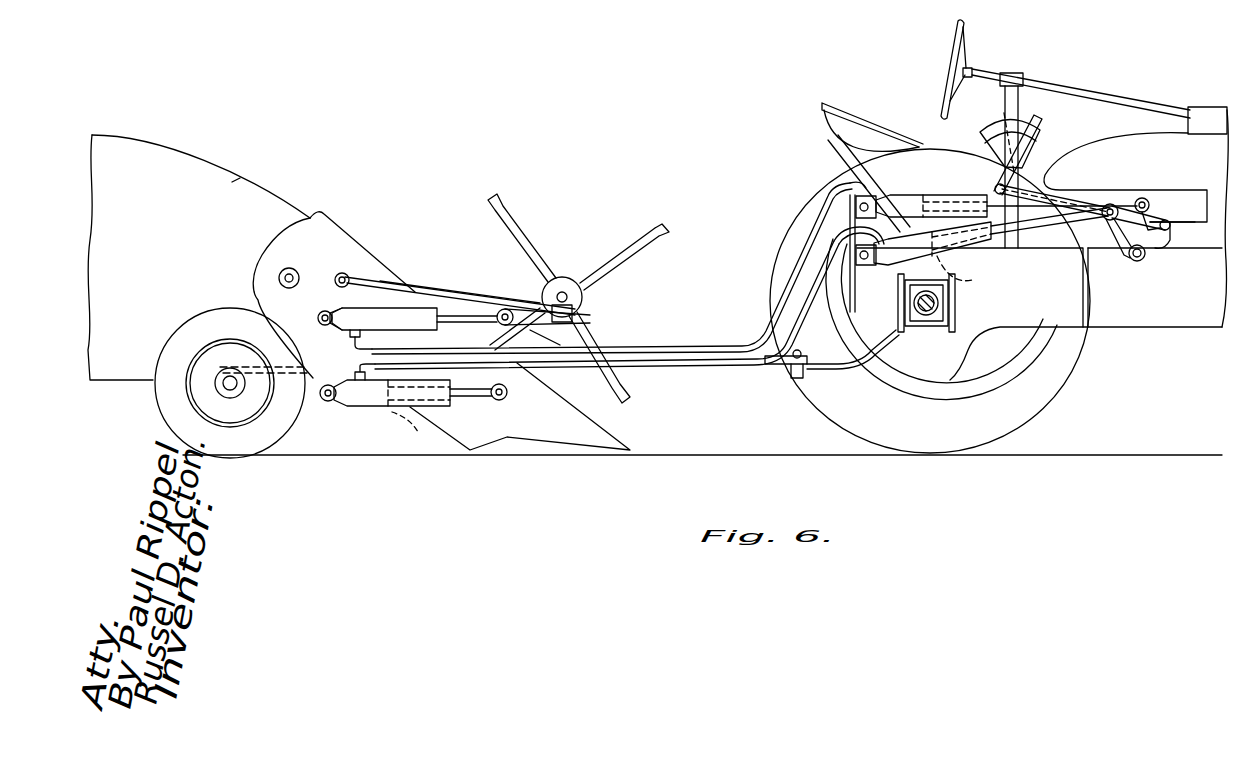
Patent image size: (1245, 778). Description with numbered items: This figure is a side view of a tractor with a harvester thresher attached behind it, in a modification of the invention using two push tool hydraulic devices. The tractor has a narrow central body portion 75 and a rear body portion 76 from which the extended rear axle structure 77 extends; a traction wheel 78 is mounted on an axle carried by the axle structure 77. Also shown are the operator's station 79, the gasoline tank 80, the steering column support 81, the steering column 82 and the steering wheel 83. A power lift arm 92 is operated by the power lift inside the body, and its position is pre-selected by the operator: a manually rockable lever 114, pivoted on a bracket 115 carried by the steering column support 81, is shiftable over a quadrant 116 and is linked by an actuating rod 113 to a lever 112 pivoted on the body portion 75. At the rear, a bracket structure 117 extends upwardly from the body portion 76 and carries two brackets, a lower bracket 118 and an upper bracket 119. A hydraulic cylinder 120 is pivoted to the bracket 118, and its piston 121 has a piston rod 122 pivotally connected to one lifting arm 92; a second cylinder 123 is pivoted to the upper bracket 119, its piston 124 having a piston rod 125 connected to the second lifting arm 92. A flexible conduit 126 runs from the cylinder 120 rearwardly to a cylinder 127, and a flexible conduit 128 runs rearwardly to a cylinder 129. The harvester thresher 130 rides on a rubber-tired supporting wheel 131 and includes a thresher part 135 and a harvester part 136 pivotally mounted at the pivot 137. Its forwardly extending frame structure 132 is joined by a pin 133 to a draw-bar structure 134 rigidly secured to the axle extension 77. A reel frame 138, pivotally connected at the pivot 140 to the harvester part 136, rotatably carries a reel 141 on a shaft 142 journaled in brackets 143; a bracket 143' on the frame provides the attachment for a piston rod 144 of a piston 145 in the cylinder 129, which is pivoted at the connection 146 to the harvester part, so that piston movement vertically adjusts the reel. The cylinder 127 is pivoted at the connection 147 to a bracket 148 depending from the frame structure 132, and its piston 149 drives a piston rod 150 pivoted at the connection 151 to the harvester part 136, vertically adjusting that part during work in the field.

The narrow central body portion 75 is at (1155, 328).
The rear body portion 76 is at (1043, 328).
The rear axle structure 77 is at (940, 322).
The traction wheel 78 is at (1020, 400).
The operator's station 79 is at (847, 124).
The gasoline tank 80 is at (1118, 145).
The steering column support 81 is at (1014, 97).
The steering column 82 is at (1096, 98).
The steering wheel 83 is at (964, 24).
The power lift arm 92 is at (1150, 208).
The lever 112 is at (1167, 240).
The actuating rod 113 is at (1055, 195).
The manually rockable lever 114 is at (1037, 124).
The bracket 115 is at (985, 148).
The quadrant 116 is at (1000, 125).
The bracket structure 117 is at (847, 292).
The bracket 118 is at (856, 256).
The upper bracket 119 is at (856, 206).
The hydraulic cylinder 120 is at (965, 250).
The piston 121 is at (955, 283).
The piston rod 122 is at (1044, 242).
The second cylinder 123 is at (907, 200).
The piston 124 is at (926, 203).
The piston rod 125 is at (996, 204).
The flexible conduit 126 is at (804, 290).
The cylinder 127 is at (366, 406).
The flexible conduit 128 is at (817, 236).
The cylinder 129 is at (362, 310).
The harvester thresher 130 is at (210, 132).
The supporting wheel 131 is at (168, 398).
The frame structure 132 is at (703, 369).
The pin 133 is at (794, 378).
The draw-bar structure 134 is at (842, 370).
The thresher part 135 is at (232, 180).
The harvester part 136 is at (322, 226).
The pivot 137 is at (279, 276).
The reel frame 138 is at (430, 290).
The pivotal connection 140 is at (338, 275).
The reel 141 is at (622, 250).
The shaft 142 is at (563, 291).
The bracket 143 is at (563, 321).
The bracket 143' is at (546, 336).
The piston rod 144 is at (478, 315).
The piston 145 is at (380, 306).
The pivotal connection 146 is at (318, 318).
The pivotal connection 147 is at (331, 401).
The bracket 148 is at (313, 380).
The piston 149 is at (405, 428).
The piston rod 150 is at (466, 398).
The pivotal connection 151 is at (505, 398).